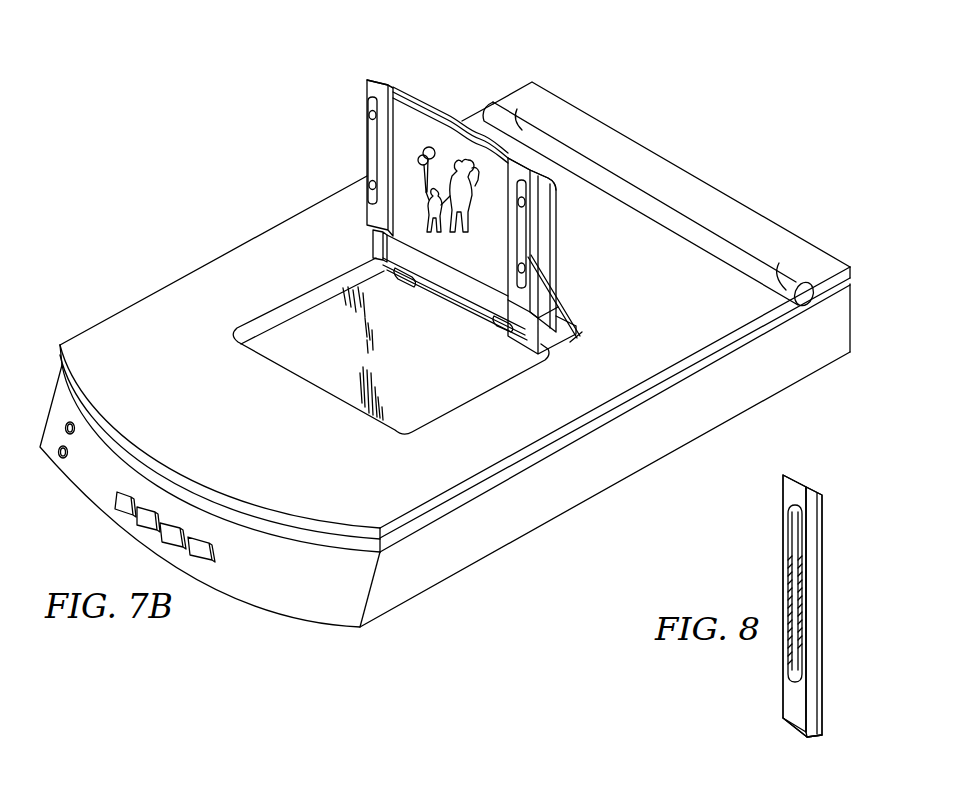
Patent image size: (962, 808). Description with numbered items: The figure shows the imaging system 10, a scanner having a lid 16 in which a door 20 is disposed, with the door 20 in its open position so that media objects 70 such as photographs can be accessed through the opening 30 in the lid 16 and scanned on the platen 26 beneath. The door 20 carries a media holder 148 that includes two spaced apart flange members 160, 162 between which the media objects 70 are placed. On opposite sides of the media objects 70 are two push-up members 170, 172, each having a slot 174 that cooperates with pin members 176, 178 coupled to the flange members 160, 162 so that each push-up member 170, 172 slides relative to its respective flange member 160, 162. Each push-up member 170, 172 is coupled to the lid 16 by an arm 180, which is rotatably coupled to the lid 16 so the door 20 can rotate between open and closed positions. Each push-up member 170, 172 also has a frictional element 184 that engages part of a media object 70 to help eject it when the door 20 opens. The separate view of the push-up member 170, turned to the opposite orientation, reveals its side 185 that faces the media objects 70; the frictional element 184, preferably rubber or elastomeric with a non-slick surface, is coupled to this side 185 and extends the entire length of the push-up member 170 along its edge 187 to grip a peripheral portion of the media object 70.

In FIG. 7B, the imaging system 10 is at (188, 208).
In FIG. 7B, the lid 16 is at (98, 340).
In FIG. 7B, the door 20 is at (406, 81).
In FIG. 7B, the platen 26 is at (333, 361).
In FIG. 7B, the opening 30 is at (246, 326).
In FIG. 7B, the media objects 70 is at (428, 112).
In FIG. 7B, the media holder 148 is at (558, 249).
In FIG. 7B, the flange member 160 is at (522, 360).
In FIG. 7B, the flange member 162 is at (373, 236).
In FIG. 7B, the push-up member 170 is at (545, 172).
In FIG. 8, the push-up member 170 is at (806, 466).
In FIG. 7B, the push-up member 172 is at (368, 88).
In FIG. 7B, the slot 174 is at (369, 207).
In FIG. 8, the slot 174 is at (790, 526).
In FIG. 7B, the pin member 176 is at (370, 119).
In FIG. 7B, the pin member 178 is at (370, 182).
In FIG. 7B, the arm 180 is at (566, 324).
In FIG. 7B, the frictional element 184 is at (388, 85).
In FIG. 8, the frictional element 184 is at (800, 718).
In FIG. 8, the side 185 is at (790, 702).
In FIG. 8, the edge 187 is at (826, 484).